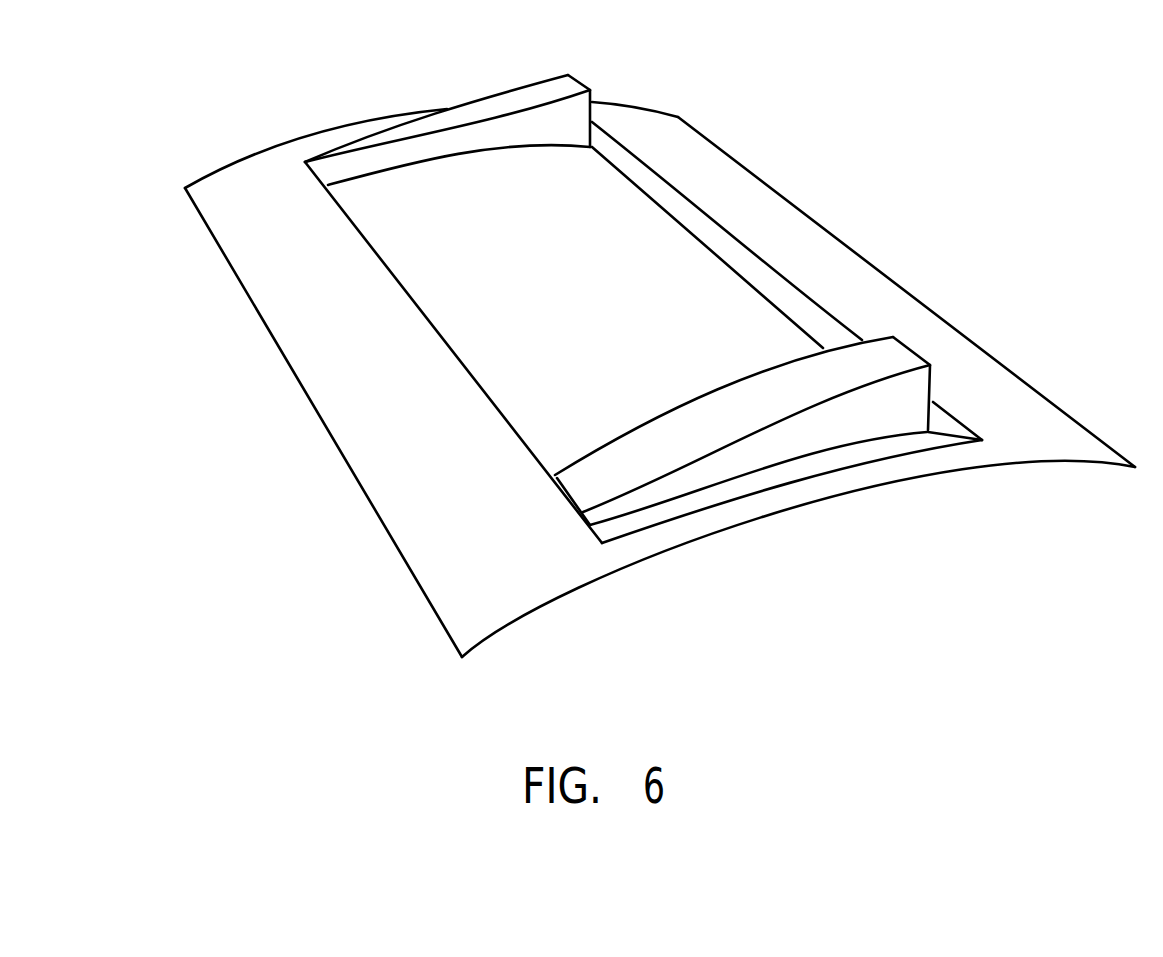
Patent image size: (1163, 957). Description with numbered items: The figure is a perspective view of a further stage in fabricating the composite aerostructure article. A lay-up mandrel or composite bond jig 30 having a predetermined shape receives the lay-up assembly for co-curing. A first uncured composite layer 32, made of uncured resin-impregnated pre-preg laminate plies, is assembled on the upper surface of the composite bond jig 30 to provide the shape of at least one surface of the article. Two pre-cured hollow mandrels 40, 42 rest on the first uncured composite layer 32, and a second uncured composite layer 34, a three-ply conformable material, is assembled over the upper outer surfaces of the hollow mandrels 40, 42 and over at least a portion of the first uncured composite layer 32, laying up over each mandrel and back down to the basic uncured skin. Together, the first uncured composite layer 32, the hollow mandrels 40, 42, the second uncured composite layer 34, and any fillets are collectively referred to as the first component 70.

The first component 70 is at (425, 88).
The composite bond jig 30 is at (809, 505).
The first uncured composite layer 32 is at (742, 258).
The second uncured composite layer 34 is at (623, 217).
The hollow mandrel 40 is at (587, 87).
The hollow mandrel 42 is at (912, 348).